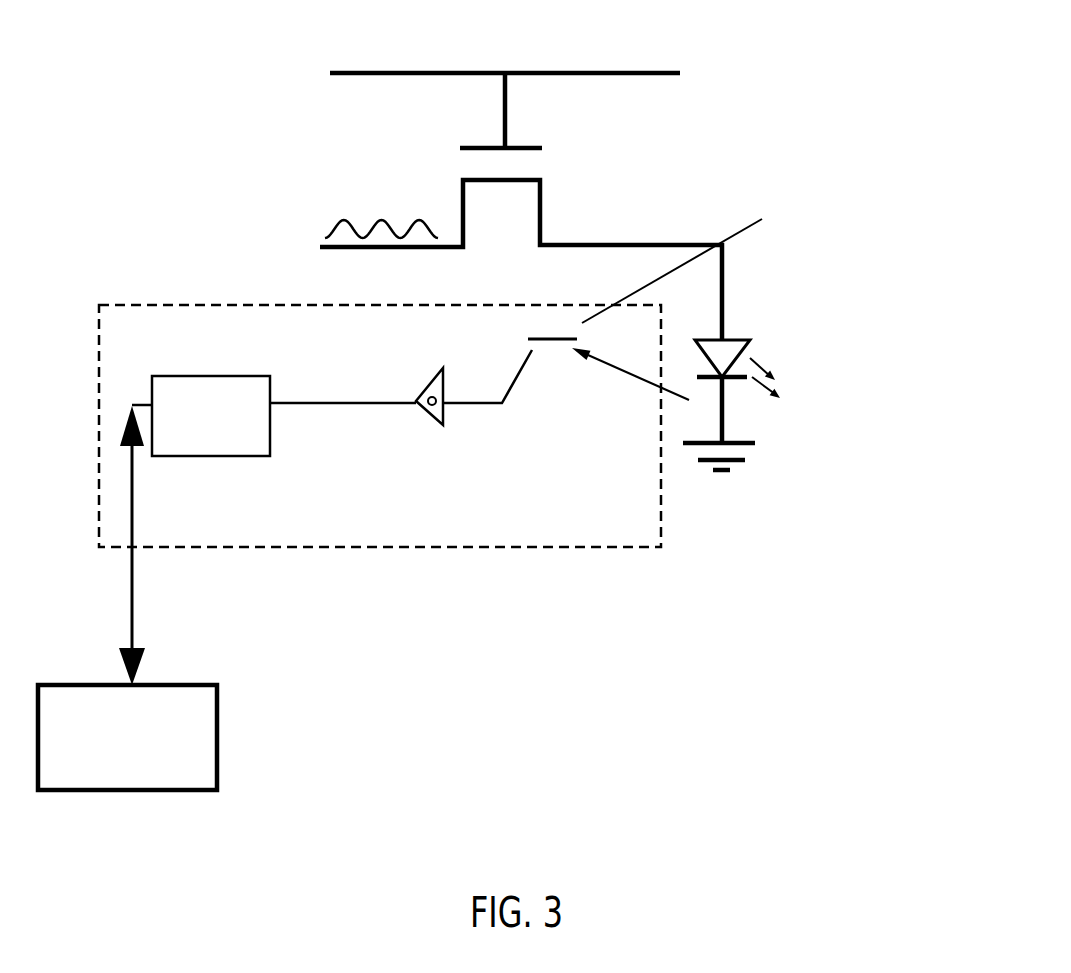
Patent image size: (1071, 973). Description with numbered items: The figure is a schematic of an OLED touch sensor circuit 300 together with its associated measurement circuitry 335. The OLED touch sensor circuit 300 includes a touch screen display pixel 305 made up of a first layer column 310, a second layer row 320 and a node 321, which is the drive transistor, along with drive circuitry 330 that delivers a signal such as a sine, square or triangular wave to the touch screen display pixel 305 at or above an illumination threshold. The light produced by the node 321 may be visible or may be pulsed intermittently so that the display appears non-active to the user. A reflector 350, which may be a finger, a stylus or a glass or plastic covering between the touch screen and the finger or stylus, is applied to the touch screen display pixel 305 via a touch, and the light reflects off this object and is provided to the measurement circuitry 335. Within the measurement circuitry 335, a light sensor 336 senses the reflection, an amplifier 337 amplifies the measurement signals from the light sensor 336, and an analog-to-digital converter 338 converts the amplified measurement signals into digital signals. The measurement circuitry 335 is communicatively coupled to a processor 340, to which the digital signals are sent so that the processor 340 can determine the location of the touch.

The OLED touch sensor circuit 300 is at (744, 526).
The touch screen display pixel 305 is at (712, 98).
The first layer column 310 is at (290, 296).
The second layer row 320 is at (283, 118).
The node 321 is at (578, 162).
The drive circuitry 330 is at (396, 200).
The measurement circuitry 335 is at (398, 580).
The light sensor 336 is at (565, 415).
The amplifier 337 is at (463, 461).
The analog-to-digital converter 338 is at (245, 510).
The processor 340 is at (103, 770).
The reflector 350 is at (860, 310).